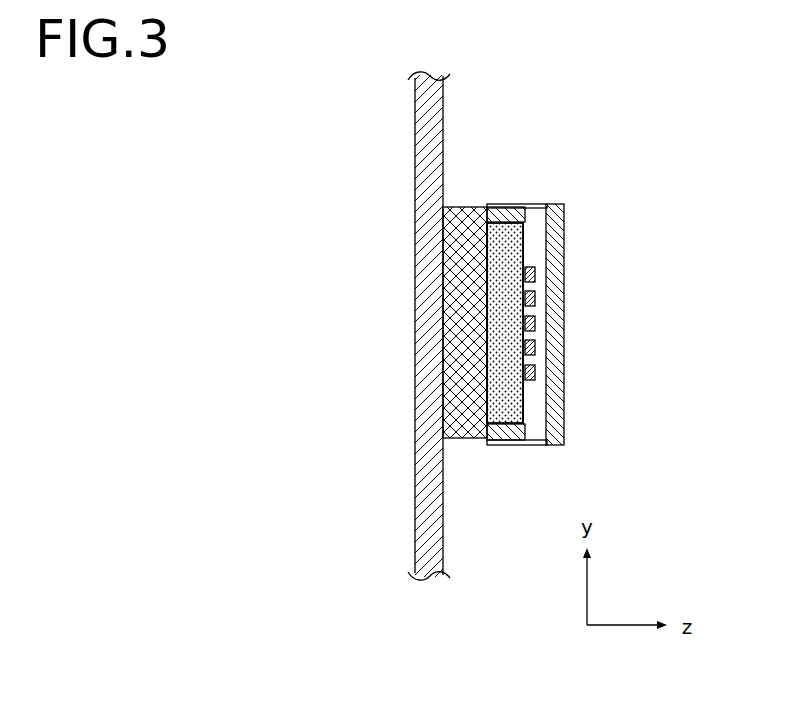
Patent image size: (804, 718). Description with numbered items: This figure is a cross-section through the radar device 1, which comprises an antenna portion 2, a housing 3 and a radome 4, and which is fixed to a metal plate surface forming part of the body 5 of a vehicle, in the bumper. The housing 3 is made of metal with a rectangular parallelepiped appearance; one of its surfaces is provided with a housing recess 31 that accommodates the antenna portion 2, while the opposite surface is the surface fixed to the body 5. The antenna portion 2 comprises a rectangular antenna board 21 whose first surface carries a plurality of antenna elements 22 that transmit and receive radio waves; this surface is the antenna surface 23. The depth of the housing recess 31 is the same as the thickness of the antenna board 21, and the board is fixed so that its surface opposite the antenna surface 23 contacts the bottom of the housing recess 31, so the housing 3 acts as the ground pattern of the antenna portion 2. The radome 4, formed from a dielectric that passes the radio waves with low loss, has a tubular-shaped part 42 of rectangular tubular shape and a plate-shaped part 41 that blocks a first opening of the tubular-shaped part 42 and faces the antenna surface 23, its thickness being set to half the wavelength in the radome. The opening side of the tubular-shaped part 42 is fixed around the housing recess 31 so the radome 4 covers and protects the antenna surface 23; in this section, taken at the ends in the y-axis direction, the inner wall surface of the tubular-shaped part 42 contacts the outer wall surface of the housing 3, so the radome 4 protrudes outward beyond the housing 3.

The radar device 1 is at (653, 158).
The antenna portion 2 is at (539, 249).
The housing 3 is at (467, 213).
The radome 4 is at (559, 324).
The body 5 is at (430, 143).
The antenna board 21 is at (510, 391).
The antenna elements 22 is at (535, 345).
The antenna surface 23 is at (525, 412).
The housing recess 31 is at (507, 342).
The plate-shaped part 41 is at (555, 323).
The tubular-shaped part 42 is at (521, 205).